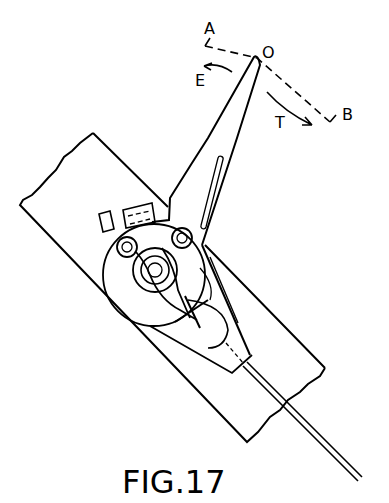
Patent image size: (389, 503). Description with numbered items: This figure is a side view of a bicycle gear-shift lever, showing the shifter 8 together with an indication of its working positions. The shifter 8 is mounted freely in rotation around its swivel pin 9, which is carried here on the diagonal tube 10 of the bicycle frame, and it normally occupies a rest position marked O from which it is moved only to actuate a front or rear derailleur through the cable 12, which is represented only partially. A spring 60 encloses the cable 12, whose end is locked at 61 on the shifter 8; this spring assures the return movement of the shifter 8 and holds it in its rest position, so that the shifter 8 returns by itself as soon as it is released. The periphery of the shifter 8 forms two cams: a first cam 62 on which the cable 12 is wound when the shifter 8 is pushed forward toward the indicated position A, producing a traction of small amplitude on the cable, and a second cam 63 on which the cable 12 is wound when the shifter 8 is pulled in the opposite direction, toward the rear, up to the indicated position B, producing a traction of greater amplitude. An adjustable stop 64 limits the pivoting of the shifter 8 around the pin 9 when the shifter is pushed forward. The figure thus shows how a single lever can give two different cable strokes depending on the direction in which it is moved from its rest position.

The shifter 8 is at (227, 131).
The swivel pin 9 is at (132, 310).
The diagonal tube 10 is at (285, 338).
The cable 12 is at (308, 425).
The spring 60 is at (137, 278).
The cable end locking point 61 is at (193, 239).
The first cam 62 is at (158, 343).
The second cam 63 is at (203, 285).
The adjustable stop 64 is at (142, 203).